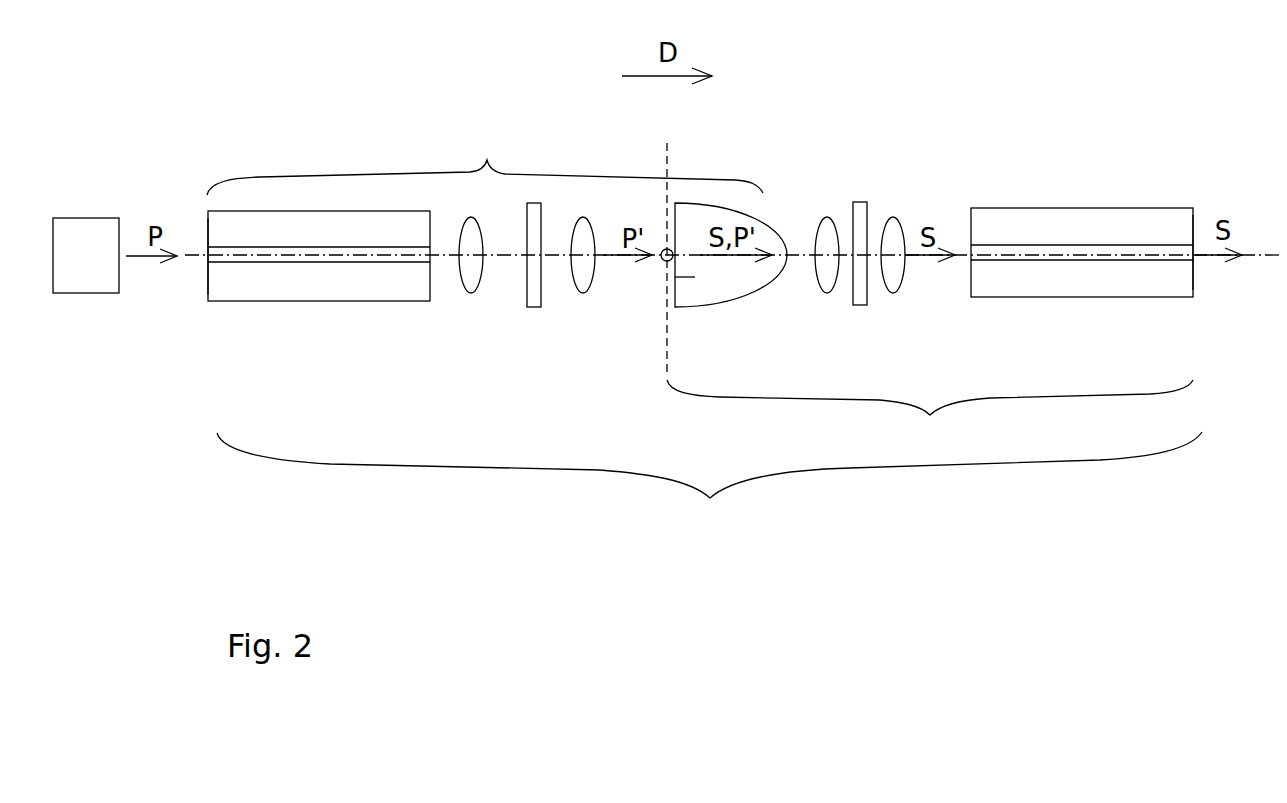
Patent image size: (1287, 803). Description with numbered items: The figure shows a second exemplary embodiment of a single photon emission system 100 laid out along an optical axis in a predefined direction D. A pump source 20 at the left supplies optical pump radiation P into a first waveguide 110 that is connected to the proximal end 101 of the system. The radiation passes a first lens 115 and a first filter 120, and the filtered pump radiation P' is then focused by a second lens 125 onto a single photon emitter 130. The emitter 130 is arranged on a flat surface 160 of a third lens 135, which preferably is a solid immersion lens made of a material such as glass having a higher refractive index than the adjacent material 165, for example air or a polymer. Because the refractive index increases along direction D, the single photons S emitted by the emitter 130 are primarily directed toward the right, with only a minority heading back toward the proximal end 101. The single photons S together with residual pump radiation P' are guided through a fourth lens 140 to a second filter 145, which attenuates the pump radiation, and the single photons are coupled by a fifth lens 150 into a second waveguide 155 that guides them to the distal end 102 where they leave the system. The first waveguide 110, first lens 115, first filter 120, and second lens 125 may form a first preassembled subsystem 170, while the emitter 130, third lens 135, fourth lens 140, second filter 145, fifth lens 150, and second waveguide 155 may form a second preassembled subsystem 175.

The pump light source 20 is at (86, 255).
The single photon emission system 100 is at (709, 485).
The proximal end 101 is at (208, 253).
The distal end 102 is at (1193, 248).
The first waveguide 110 is at (290, 285).
The first lens 115 is at (471, 270).
The first filter 120 is at (523, 280).
The second lens 125 is at (583, 290).
The single photon emitter 130 is at (665, 260).
The third lens 135 is at (757, 283).
The fourth lens 140 is at (830, 225).
The second filter 145 is at (861, 298).
The fifth lens 150 is at (898, 222).
The second waveguide 155 is at (1133, 223).
The flat surface 160 is at (695, 277).
The material 165 is at (660, 211).
The first preassembled subsystem 170 is at (485, 161).
The second preassembled subsystem 175 is at (930, 417).